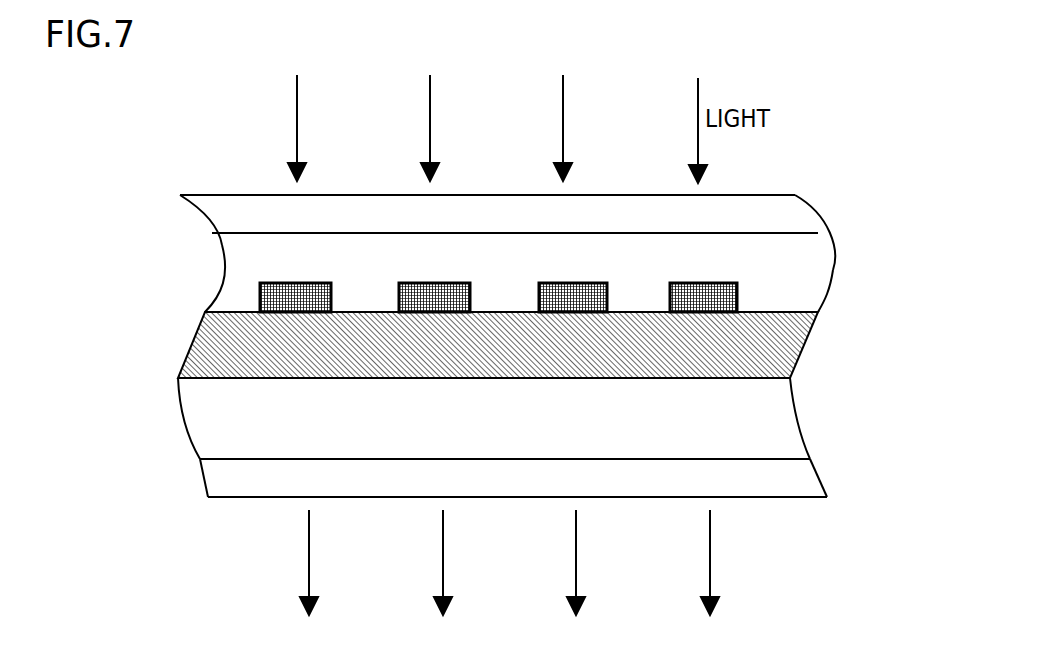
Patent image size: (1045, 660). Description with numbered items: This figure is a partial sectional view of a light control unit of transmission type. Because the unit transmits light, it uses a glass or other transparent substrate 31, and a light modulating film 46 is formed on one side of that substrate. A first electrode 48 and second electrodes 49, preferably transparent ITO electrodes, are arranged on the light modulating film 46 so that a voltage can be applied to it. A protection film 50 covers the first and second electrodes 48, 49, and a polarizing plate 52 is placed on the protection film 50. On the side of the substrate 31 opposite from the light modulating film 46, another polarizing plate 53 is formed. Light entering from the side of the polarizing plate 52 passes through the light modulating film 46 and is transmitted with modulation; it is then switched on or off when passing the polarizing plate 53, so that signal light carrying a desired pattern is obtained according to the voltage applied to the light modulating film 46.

The polarizing plate 52 is at (805, 208).
The protection film 50 is at (833, 268).
The second electrode 49 is at (592, 286).
The first electrode 48 is at (745, 283).
The light modulating film 46 is at (803, 357).
The transparent substrate 31 is at (803, 435).
The polarizing plate 53 is at (820, 485).